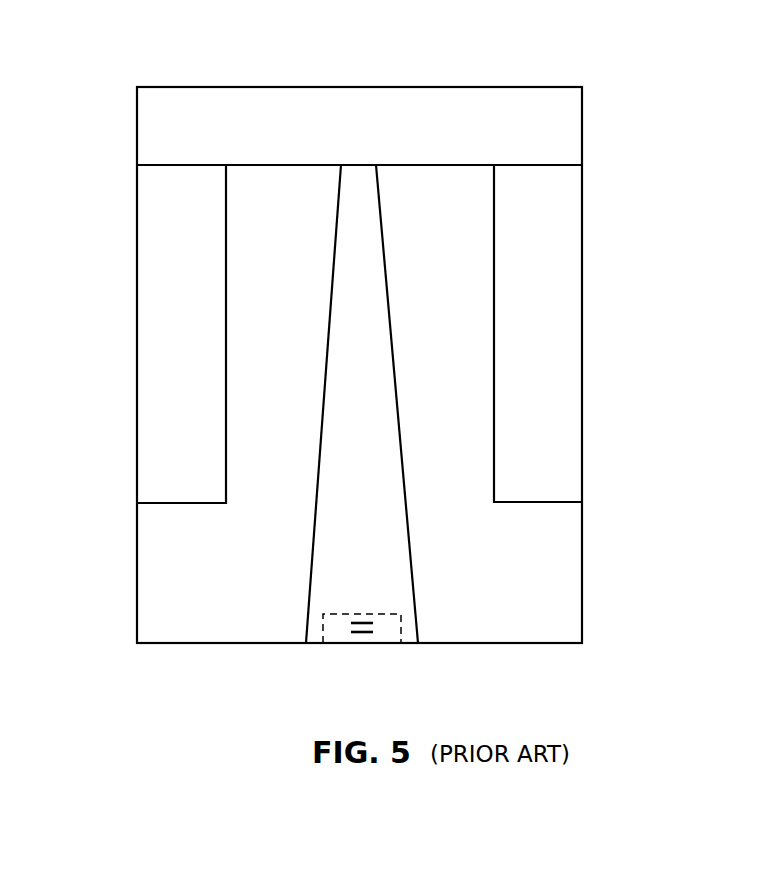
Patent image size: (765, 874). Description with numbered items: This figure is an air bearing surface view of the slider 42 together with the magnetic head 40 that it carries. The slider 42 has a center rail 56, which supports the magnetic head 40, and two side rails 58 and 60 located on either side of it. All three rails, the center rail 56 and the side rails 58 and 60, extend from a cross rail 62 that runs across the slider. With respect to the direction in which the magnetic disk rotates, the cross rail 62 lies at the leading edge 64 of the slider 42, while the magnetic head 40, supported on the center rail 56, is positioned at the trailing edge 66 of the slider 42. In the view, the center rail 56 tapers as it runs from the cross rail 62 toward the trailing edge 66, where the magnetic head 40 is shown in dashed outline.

The magnetic head 40 is at (342, 637).
The slider 42 is at (130, 593).
The center rail 56 is at (345, 278).
The side rail 58 is at (153, 247).
The side rail 60 is at (565, 244).
The cross rail 62 is at (280, 101).
The leading edge 64 is at (459, 87).
The trailing edge 66 is at (483, 643).